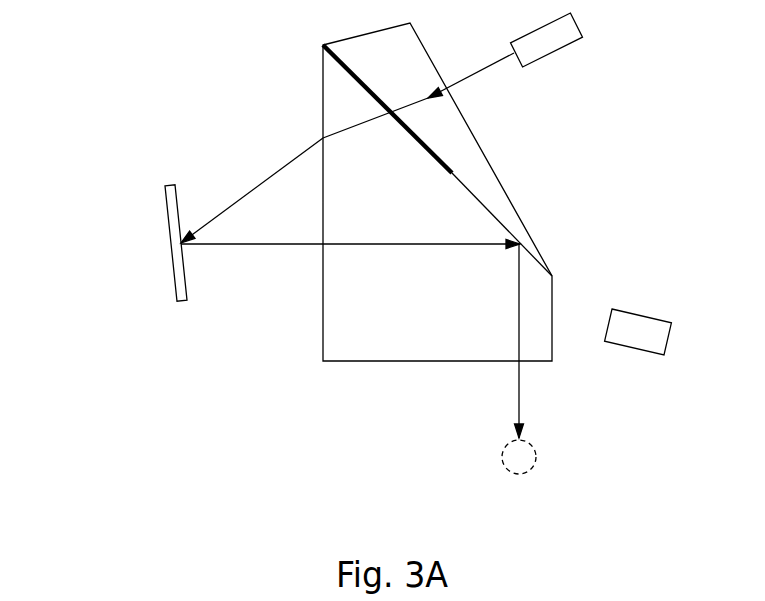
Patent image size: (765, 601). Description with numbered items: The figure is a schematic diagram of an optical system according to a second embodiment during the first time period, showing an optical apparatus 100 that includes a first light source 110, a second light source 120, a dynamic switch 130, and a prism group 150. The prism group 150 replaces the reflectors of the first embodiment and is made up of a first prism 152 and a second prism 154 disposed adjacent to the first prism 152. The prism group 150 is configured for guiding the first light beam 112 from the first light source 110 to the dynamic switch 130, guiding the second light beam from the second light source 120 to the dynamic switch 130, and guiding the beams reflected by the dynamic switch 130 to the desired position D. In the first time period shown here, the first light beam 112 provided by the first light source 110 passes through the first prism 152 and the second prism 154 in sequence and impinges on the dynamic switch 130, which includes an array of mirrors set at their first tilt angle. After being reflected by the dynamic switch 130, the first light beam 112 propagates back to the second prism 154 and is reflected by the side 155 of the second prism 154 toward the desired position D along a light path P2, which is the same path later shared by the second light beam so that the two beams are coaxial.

The optical apparatus 100 is at (60, 83).
The first light source 110 is at (572, 35).
The first light beam 112 is at (474, 74).
The second light source 120 is at (665, 330).
The dynamic switch 130 is at (170, 218).
The prism group 150 is at (524, 192).
The first prism 152 is at (430, 131).
The second prism 154 is at (430, 187).
The side of the second prism 155 is at (550, 224).
The light path P2 is at (521, 385).
The desired position D is at (536, 455).